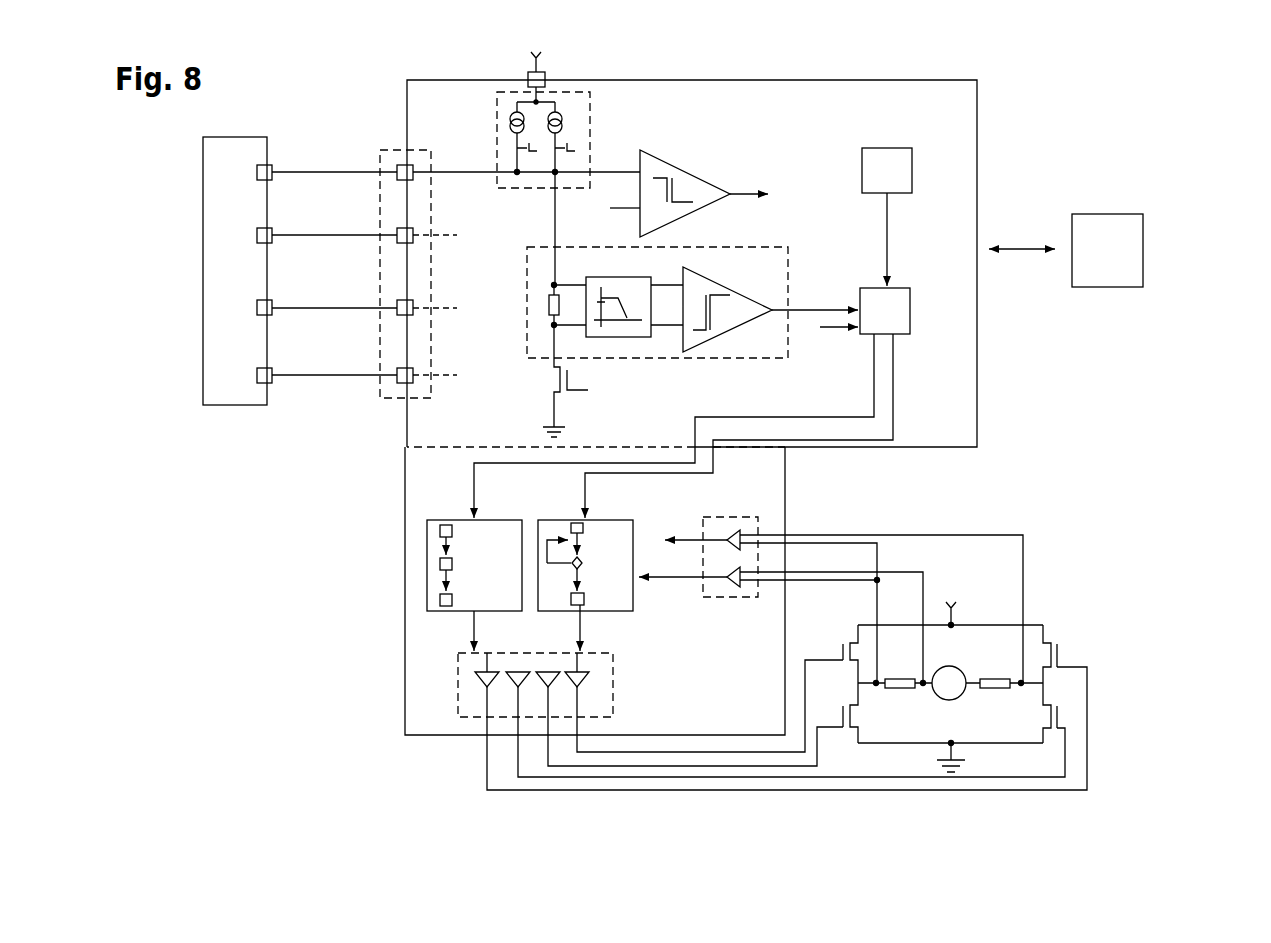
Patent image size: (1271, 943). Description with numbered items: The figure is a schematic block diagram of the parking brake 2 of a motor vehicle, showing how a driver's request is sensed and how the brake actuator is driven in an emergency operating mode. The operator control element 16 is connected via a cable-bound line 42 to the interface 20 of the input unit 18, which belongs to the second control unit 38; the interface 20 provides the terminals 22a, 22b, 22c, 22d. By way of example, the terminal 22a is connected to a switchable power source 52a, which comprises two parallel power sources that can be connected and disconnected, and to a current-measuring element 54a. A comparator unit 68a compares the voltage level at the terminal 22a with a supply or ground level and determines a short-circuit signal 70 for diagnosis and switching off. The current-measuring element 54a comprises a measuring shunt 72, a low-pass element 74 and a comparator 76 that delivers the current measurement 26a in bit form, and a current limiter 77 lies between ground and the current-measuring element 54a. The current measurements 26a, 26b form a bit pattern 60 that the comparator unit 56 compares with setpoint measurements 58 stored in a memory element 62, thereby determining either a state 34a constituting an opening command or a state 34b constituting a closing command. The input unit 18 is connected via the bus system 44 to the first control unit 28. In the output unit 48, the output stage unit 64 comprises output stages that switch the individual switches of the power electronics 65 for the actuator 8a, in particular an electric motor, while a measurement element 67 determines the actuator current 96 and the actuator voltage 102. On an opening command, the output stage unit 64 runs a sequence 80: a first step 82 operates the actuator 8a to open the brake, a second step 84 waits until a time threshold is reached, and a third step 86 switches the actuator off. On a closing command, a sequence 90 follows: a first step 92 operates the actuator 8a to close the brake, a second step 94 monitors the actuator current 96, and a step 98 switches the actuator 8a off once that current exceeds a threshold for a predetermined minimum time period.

The parking brake 2 is at (1195, 138).
The operator control element 16 is at (235, 137).
The cable-bound line 42 is at (456, 224).
The interface 20 is at (387, 150).
The terminal 22a is at (397, 170).
The terminal 22b is at (397, 233).
The terminal 22c is at (397, 306).
The terminal 22d is at (397, 373).
The input unit 18 is at (965, 112).
The second control unit 38 is at (738, 263).
The switchable power source 52a is at (590, 120).
The comparator unit 68a is at (700, 178).
The short-circuit signal 70 is at (745, 193).
The current-measuring element 54a is at (654, 283).
The measuring shunt 72 is at (549, 305).
The low-pass element 74 is at (615, 337).
The comparator 76 is at (720, 335).
The current limiter 77 is at (544, 384).
The memory element 62 is at (887, 148).
The setpoint measurements 58 is at (887, 205).
The bit pattern 60 is at (847, 281).
The comparator unit 56 is at (910, 308).
The current measurement 26a is at (808, 310).
The current measurement 26b is at (826, 327).
The state 34a is at (874, 355).
The state 34b is at (893, 372).
The bus system 44 is at (1020, 248).
The first control unit 28 is at (1105, 214).
The output unit 48 is at (748, 482).
The sequence 80 is at (437, 533).
The first step 82 is at (440, 531).
The second step 84 is at (440, 564).
The third step 86 is at (440, 600).
The sequence 90 is at (606, 556).
The first step 92 is at (571, 523).
The second step 94 is at (583, 565).
The step 98 is at (579, 612).
The output stage unit 64 is at (613, 685).
The measurement element 67 is at (700, 594).
The actuator current 96 is at (655, 578).
The actuator voltage 102 is at (693, 541).
The power electronics 65 is at (956, 653).
The actuator 8a is at (962, 670).